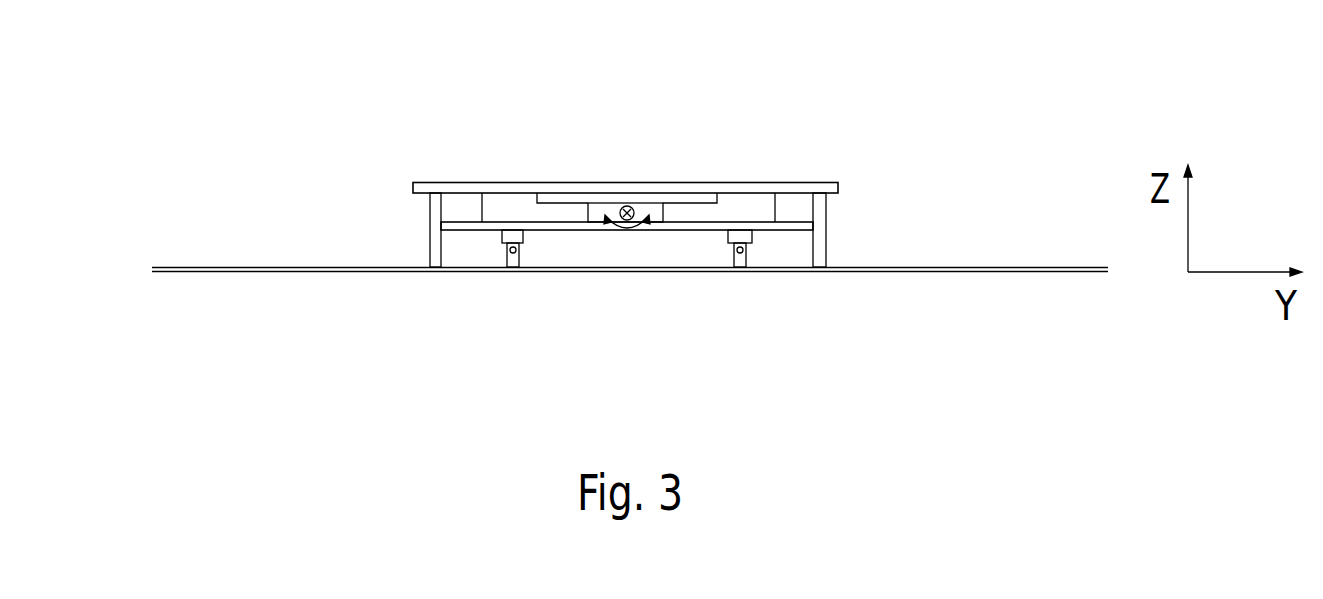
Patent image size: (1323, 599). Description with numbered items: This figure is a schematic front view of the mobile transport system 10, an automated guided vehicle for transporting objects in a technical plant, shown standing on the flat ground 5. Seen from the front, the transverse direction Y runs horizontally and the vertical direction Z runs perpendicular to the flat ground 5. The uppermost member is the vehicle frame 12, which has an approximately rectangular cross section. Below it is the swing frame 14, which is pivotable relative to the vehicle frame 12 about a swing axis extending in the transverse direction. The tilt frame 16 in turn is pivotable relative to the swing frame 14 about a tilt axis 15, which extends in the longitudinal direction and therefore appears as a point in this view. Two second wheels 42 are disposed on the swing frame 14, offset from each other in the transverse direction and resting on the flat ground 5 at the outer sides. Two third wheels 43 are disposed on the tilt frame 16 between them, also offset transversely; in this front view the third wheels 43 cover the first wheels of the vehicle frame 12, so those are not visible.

The mobile transport system 10 is at (124, 134).
The flat ground 5 is at (297, 268).
The vehicle frame 12 is at (523, 187).
The swing frame 14 is at (778, 226).
The tilt axis 15 is at (630, 200).
The tilt frame 16 is at (688, 226).
The second wheels 42 is at (435, 228).
The third wheels 43 is at (512, 263).